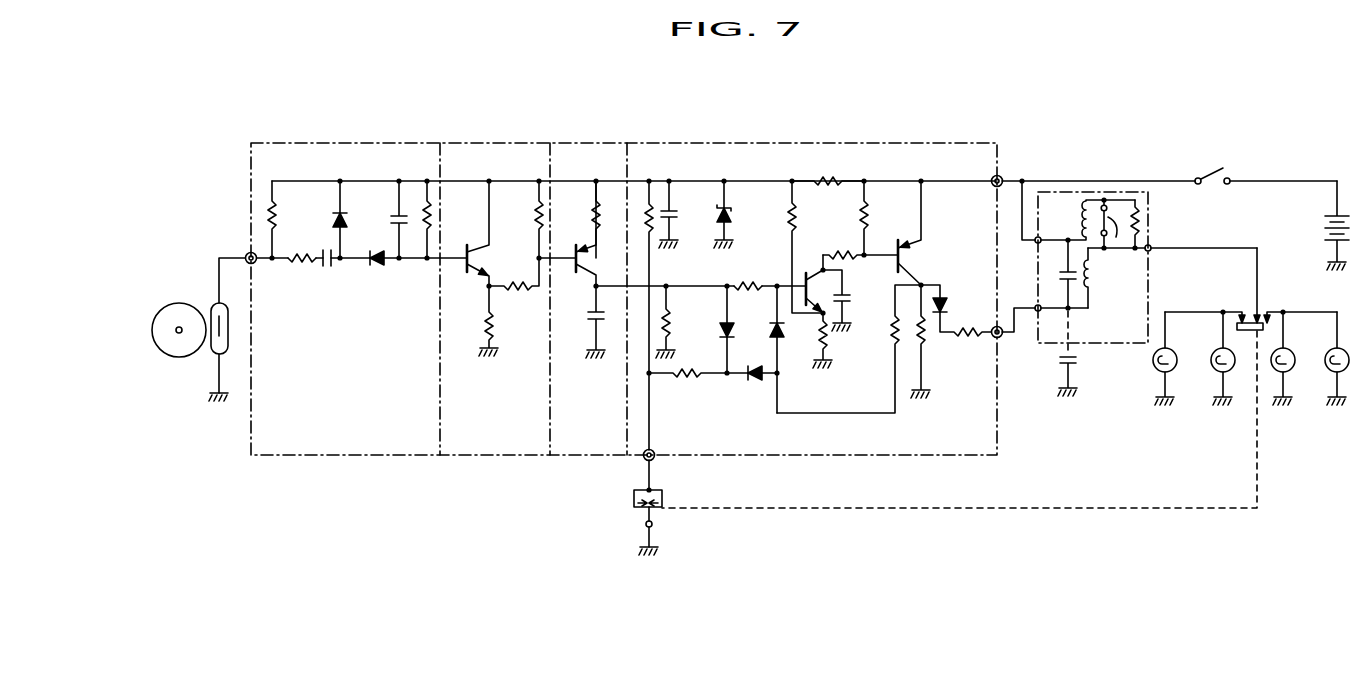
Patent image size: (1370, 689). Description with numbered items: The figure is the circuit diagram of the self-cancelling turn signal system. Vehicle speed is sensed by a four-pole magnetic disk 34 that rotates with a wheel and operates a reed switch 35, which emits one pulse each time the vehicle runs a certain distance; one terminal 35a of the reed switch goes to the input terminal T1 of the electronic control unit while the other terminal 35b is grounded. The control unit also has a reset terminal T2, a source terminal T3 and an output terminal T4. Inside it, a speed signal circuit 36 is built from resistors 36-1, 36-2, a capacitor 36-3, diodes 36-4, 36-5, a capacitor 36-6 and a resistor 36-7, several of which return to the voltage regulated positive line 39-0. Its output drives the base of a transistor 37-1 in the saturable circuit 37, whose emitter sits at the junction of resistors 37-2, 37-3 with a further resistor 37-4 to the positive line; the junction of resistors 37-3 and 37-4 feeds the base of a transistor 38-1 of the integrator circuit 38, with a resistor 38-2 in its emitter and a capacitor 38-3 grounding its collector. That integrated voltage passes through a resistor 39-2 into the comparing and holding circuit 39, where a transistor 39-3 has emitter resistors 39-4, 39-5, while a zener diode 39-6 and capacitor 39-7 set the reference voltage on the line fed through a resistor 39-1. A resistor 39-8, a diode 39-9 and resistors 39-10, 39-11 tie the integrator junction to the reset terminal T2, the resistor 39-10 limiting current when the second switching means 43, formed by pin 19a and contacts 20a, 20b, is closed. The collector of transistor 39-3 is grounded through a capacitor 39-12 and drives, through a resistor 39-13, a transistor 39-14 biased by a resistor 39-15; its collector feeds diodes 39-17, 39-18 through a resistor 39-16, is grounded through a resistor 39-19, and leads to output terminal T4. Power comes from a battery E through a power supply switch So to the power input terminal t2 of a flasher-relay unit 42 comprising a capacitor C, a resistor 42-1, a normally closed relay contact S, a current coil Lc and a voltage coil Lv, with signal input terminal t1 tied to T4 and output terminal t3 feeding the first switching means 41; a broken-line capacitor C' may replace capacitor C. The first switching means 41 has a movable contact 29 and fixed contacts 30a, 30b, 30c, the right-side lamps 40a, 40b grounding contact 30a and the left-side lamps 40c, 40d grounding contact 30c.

The magnetic disk 34 is at (188, 303).
The reed switch 35 is at (211, 352).
The reed switch terminal 35a is at (216, 274).
The reed switch terminal 35b is at (208, 393).
The input terminal T1 is at (244, 254).
The reset terminal T2 is at (653, 463).
The source terminal T3 is at (983, 194).
The output terminal T4 is at (1007, 346).
The speed signal circuit 36 is at (411, 152).
The resistor 36-1 is at (291, 219).
The resistor 36-2 is at (301, 269).
The capacitor 36-3 is at (327, 268).
The diode 36-4 is at (334, 227).
The diode 36-5 is at (379, 268).
The capacitor 36-6 is at (394, 219).
The resistor 36-7 is at (435, 215).
The saturable circuit 37 is at (501, 152).
The transistor 37-1 is at (470, 276).
The resistor 37-2 is at (494, 327).
The resistor 37-3 is at (519, 283).
The resistor 37-4 is at (535, 227).
The integrator circuit 38 is at (584, 152).
The transistor 38-1 is at (575, 277).
The resistor 38-2 is at (593, 223).
The capacitor 38-3 is at (590, 332).
The comparing and holding circuit 39 is at (749, 152).
The voltage regulated positive line 39-0 is at (702, 180).
The resistor 39-1 is at (826, 180).
The resistor 39-2 is at (750, 283).
The transistor 39-3 is at (808, 310).
The resistor 39-4 is at (828, 341).
The resistor 39-5 is at (798, 218).
The zener diode 39-6 is at (733, 213).
The capacitor 39-7 is at (672, 207).
The resistor 39-8 is at (671, 320).
The diode 39-9 is at (723, 340).
The resistor 39-10 is at (688, 389).
The resistor 39-11 is at (652, 230).
The capacitor 39-12 is at (851, 302).
The resistor 39-13 is at (836, 253).
The transistor 39-14 is at (917, 251).
The resistor 39-15 is at (868, 220).
The resistor 39-16 is at (892, 344).
The diode 39-17 is at (770, 330).
The diode 39-18 is at (757, 383).
The resistor 39-19 is at (926, 346).
The contact 20a is at (624, 499).
The contact 20b is at (662, 498).
The pin 19a is at (652, 523).
The second switching means 43 is at (691, 566).
The power supply switch So is at (1212, 173).
The power source E is at (1325, 230).
The flasher-relay unit 42 is at (1120, 342).
The resistor 42-1 is at (1141, 219).
The current coil Lc is at (1079, 221).
The voltage coil Lv is at (1094, 282).
The capacitor C is at (1062, 274).
The capacitor C' is at (1058, 353).
The relay contact S is at (1110, 244).
The signal input terminal t1 is at (1045, 308).
The power input terminal t2 is at (1028, 224).
The output terminal t3 is at (1201, 261).
The first switching means 41 is at (1290, 259).
The movable contact 29 is at (962, 415).
The fixed contact 30a is at (1240, 314).
The fixed contact 30b is at (1258, 302).
The fixed contact 30c is at (1269, 312).
The direction display lamp 40a is at (1157, 368).
The direction display lamp 40b is at (1215, 368).
The direction display lamp 40c is at (1290, 366).
The direction display lamp 40d is at (1330, 355).